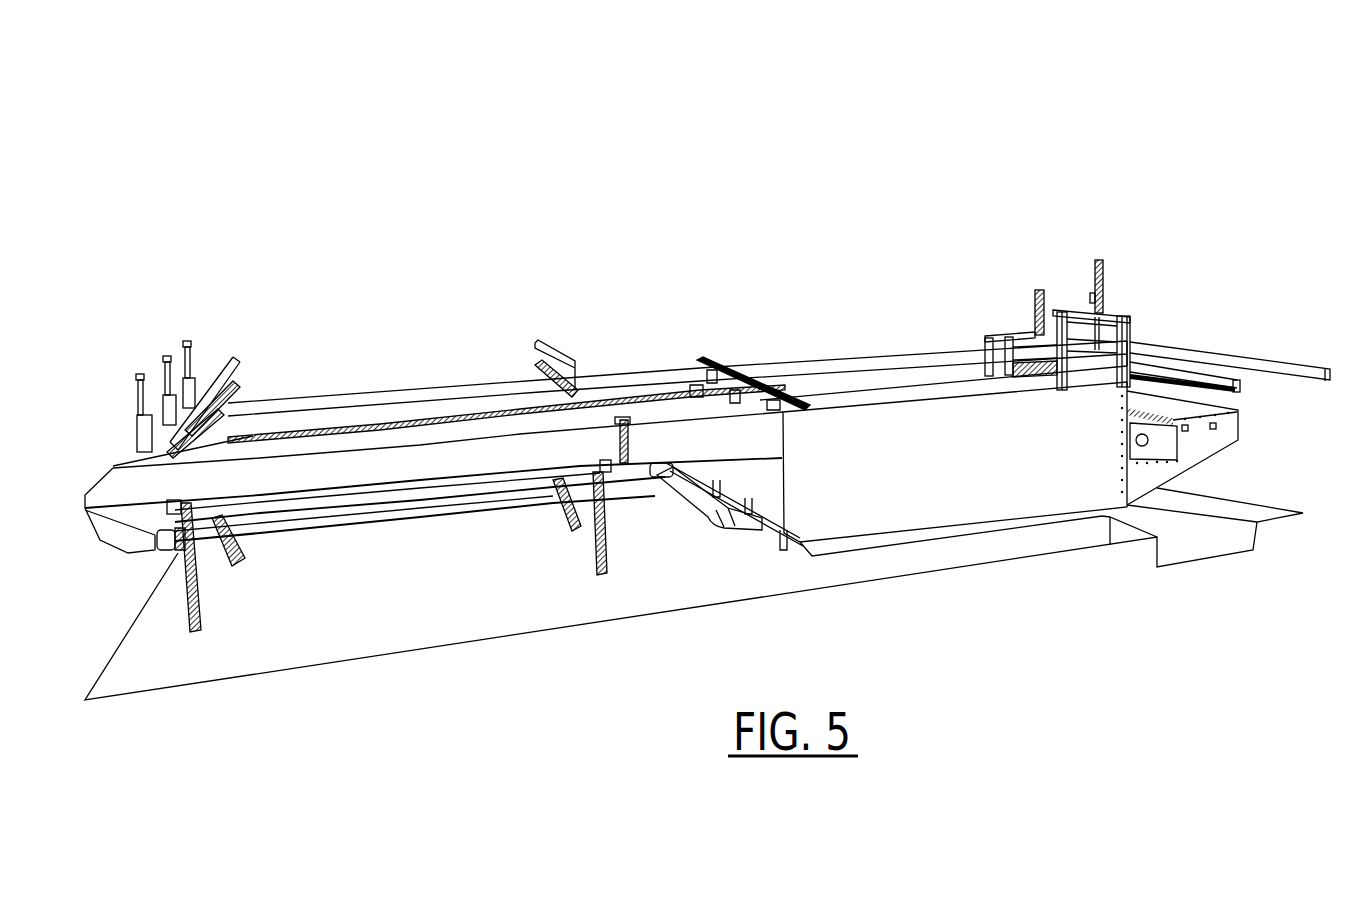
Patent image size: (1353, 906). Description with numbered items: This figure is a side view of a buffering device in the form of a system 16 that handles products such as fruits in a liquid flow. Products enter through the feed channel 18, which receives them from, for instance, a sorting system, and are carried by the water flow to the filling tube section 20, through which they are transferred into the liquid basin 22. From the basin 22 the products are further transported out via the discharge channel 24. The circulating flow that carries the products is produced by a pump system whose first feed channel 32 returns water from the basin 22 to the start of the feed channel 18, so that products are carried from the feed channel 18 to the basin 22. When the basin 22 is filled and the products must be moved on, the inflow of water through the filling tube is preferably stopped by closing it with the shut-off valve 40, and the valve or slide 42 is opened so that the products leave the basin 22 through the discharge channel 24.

The system 16 is at (1045, 150).
The feed channel 18 is at (308, 305).
The filling tube section 20 is at (616, 310).
The liquid basin 22 is at (836, 300).
The discharge channel 24 is at (1186, 295).
The first feed channel 32 is at (695, 500).
The shut-off valve 40 is at (686, 320).
The valve or slide 42 is at (1077, 357).